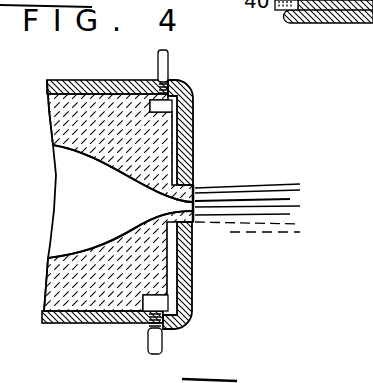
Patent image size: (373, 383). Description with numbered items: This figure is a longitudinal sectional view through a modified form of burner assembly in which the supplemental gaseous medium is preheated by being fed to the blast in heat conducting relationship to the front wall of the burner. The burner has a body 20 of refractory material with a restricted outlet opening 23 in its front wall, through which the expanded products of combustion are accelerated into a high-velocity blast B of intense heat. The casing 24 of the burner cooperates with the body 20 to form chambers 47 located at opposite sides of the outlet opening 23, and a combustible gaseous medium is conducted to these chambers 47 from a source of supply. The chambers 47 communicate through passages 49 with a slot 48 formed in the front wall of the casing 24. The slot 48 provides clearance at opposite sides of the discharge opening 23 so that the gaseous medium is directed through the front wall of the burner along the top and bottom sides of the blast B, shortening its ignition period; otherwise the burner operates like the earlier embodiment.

The body 20 is at (65, 112).
The casing 24 is at (112, 88).
The outlet opening 23 is at (196, 208).
The chambers 47 is at (170, 108).
The slot 48 is at (187, 187).
The passages 49 is at (170, 271).
The blast B is at (246, 204).